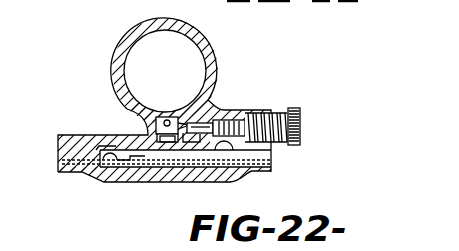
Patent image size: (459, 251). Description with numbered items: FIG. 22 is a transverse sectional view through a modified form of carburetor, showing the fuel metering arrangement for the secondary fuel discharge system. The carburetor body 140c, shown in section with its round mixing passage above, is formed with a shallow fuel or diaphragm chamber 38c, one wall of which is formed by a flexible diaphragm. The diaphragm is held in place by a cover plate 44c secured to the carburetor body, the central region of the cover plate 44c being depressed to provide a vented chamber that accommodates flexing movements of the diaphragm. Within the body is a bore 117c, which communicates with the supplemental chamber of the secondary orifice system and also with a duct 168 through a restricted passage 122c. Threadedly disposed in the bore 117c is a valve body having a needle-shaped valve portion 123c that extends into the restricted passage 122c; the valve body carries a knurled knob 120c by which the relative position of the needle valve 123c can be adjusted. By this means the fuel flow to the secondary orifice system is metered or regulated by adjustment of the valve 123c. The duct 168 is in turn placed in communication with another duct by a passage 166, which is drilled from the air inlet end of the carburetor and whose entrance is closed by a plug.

The carburetor body 140c is at (211, 44).
The passage 166 is at (168, 120).
The duct 168 is at (131, 112).
The fuel or diaphragm chamber 38c is at (107, 150).
The bore 117c is at (206, 124).
The knurled knob 120c is at (301, 122).
The cover plate 44c is at (121, 181).
The restricted passage 122c is at (198, 134).
The needle-shaped valve portion 123c is at (216, 145).